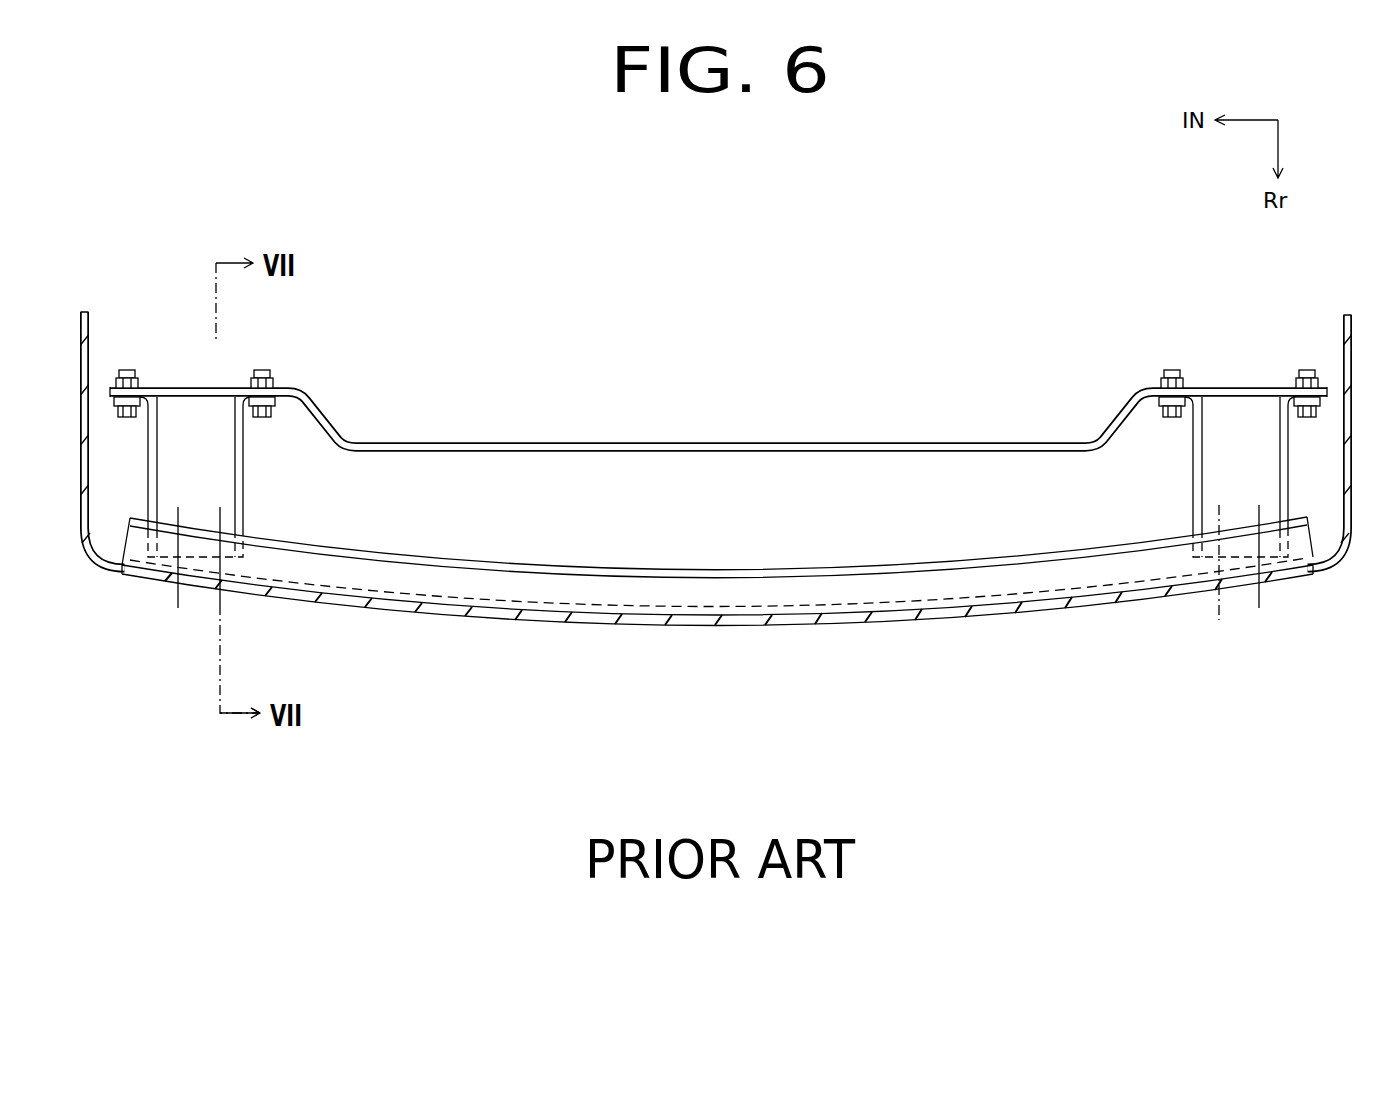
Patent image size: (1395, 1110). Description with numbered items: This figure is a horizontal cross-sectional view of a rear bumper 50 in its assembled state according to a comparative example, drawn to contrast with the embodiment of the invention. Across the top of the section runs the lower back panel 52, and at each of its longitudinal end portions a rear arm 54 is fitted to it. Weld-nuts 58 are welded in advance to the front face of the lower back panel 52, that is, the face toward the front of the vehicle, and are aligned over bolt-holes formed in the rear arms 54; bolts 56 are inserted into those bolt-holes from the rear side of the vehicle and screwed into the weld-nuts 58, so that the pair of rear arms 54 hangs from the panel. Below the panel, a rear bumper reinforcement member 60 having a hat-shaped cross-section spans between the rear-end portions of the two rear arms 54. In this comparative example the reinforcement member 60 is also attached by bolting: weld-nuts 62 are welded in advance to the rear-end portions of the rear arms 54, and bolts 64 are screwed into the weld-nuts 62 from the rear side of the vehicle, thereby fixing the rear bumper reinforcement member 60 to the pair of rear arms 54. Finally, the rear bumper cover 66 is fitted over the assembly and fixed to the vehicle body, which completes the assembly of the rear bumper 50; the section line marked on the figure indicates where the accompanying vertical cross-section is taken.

The rear bumper 50 is at (708, 692).
The lower back panel 52 is at (793, 440).
The rear arms 54 is at (245, 502).
The bolts 56 is at (260, 368).
The weld-nuts 58 is at (275, 378).
The rear bumper reinforcement member 60 is at (753, 572).
The weld-nuts 62 is at (220, 625).
The bolts 64 is at (1219, 612).
The rear bumper cover 66 is at (530, 617).